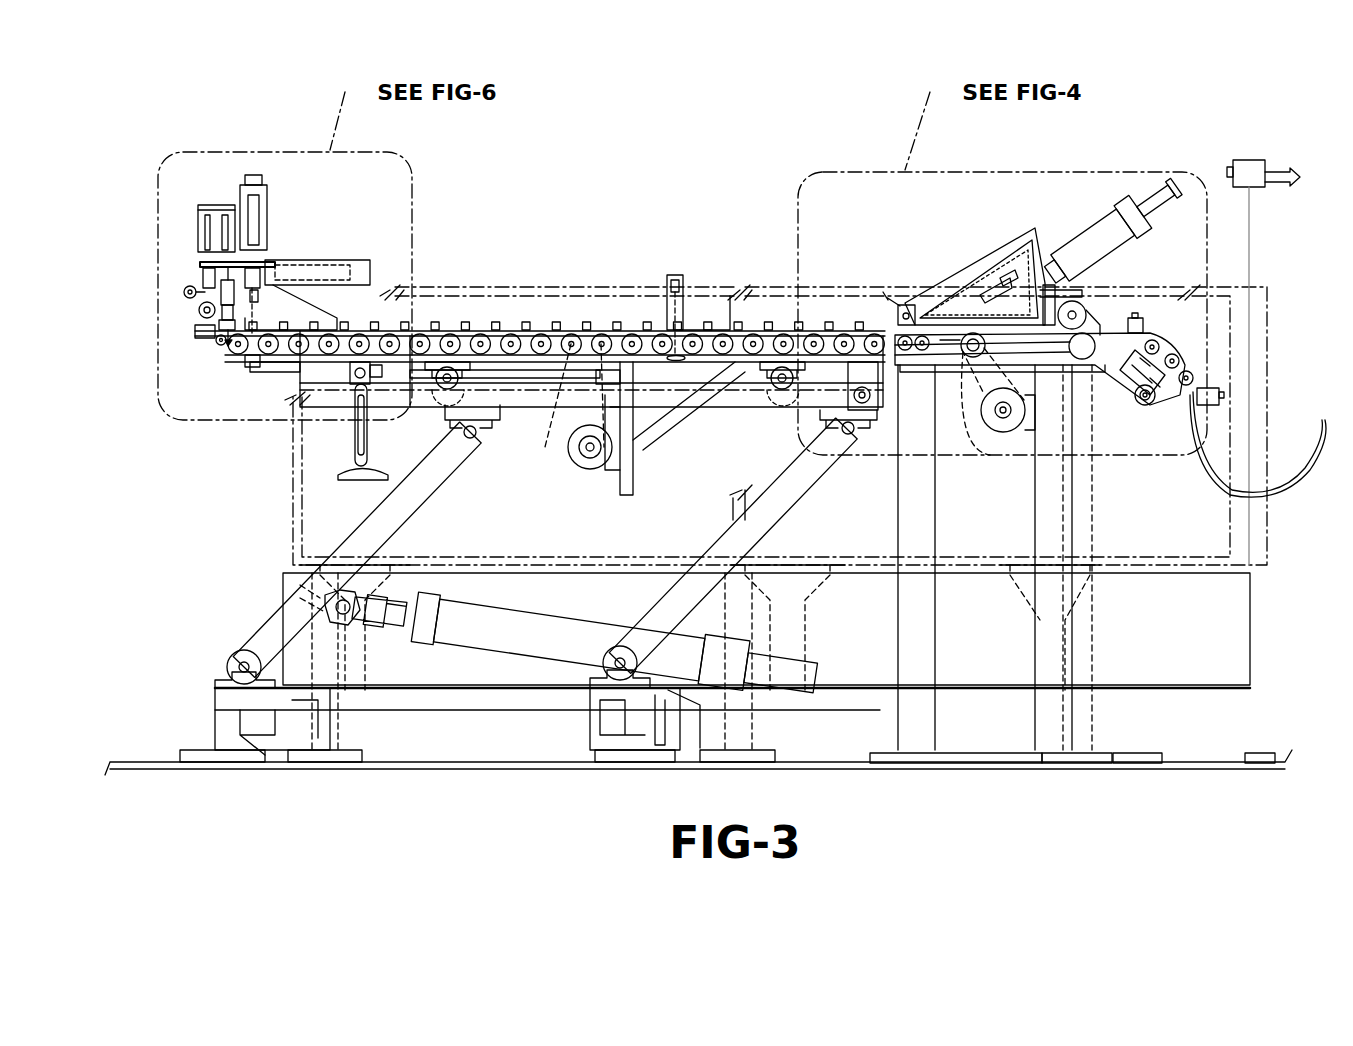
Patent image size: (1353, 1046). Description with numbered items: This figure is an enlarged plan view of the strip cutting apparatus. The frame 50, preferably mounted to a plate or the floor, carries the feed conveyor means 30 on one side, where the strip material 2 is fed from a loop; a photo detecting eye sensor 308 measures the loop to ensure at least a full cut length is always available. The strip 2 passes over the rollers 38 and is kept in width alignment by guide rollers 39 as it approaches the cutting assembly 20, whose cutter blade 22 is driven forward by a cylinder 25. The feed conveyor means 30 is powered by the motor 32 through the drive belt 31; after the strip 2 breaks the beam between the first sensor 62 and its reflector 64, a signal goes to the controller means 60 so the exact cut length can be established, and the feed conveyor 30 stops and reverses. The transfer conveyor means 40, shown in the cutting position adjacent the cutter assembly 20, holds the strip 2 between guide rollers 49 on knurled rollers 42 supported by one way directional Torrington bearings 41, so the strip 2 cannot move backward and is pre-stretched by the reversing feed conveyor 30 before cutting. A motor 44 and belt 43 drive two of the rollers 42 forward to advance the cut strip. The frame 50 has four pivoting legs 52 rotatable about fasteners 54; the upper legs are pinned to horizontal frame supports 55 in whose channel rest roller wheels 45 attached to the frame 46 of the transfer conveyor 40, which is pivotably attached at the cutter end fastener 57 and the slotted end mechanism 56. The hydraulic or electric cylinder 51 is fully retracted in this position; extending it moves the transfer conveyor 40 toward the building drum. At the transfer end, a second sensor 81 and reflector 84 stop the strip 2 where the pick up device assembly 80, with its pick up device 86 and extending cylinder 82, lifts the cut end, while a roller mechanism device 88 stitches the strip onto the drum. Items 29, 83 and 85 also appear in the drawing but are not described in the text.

The strip material 2 is at (1312, 435).
The cutting assembly 20 is at (1080, 220).
The cutter blade 22 is at (985, 300).
The cylinder 25 is at (1120, 230).
The handle 29 is at (930, 300).
The feed conveyor means 30 is at (1042, 348).
The drive belt 31 is at (960, 455).
The motor 32 is at (1007, 440).
The rollers 38 is at (1186, 378).
The guide rollers 39 is at (1137, 320).
The transfer conveyor means 40 is at (603, 322).
The one way directional Torrington bearings 41 is at (510, 345).
The knurled rollers 42 is at (550, 344).
The belt 43 is at (570, 435).
The motor 44 is at (600, 456).
The roller wheels 45 is at (447, 368).
The frame 46 is at (272, 360).
The guide rollers 49 is at (553, 345).
The frame 50 is at (218, 690).
The hydraulic or electric cylinder 51 is at (535, 622).
The pivoting legs 52 is at (348, 538).
The fasteners 54 is at (244, 667).
The horizontal frame supports 55 is at (527, 407).
The slotted end mechanism 56 is at (353, 433).
The cutter end fastener 57 is at (862, 403).
The controller means 60 is at (752, 290).
The first sensor 62 is at (677, 292).
The reflector 64 is at (677, 360).
The pick up device assembly 80 is at (230, 185).
The second sensor 81 is at (262, 297).
The cylinder 82 is at (340, 262).
The deflector plate 83 is at (300, 300).
The reflector 84 is at (255, 360).
The air cylinder 85 is at (265, 235).
The pick up device 86 is at (205, 275).
The roller mechanism device 88 is at (197, 290).
The photo detecting eye sensor 308 is at (1250, 160).